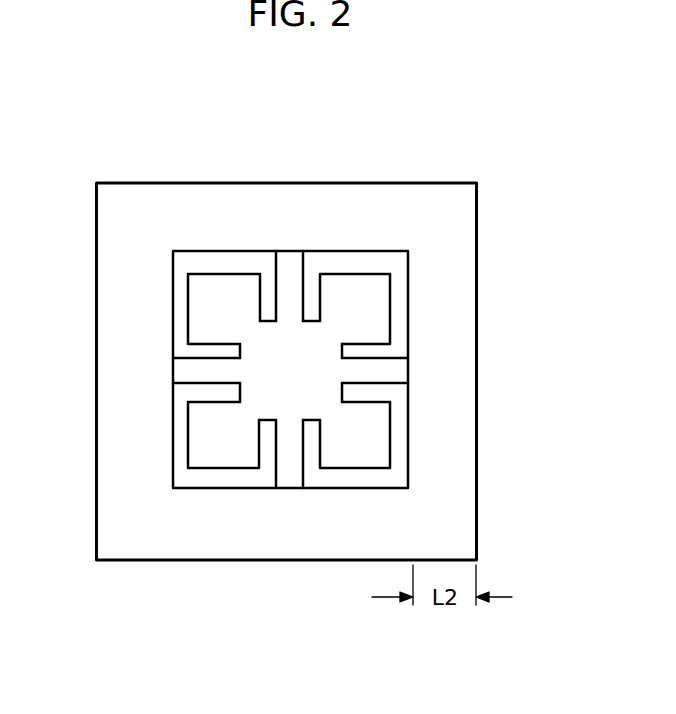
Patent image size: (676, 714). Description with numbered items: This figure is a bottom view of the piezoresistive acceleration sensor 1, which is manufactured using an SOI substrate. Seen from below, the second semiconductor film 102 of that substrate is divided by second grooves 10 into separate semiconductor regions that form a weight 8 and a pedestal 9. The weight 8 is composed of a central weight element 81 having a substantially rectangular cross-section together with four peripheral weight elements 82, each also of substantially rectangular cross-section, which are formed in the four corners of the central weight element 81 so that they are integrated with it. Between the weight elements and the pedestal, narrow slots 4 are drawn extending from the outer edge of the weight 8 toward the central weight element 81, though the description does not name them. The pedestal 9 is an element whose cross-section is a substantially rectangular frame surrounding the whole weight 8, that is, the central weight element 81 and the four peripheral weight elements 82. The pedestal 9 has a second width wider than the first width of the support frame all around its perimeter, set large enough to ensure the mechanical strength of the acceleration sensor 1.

The acceleration sensor 1 is at (360, 161).
The second semiconductor film 102 is at (185, 166).
The pedestal 9 is at (476, 323).
The second grooves 10 is at (205, 480).
The weight 8 is at (57, 203).
The central weight element 81 is at (283, 363).
The peripheral weight elements 82 is at (207, 302).
The groove / slit 4 is at (288, 265).